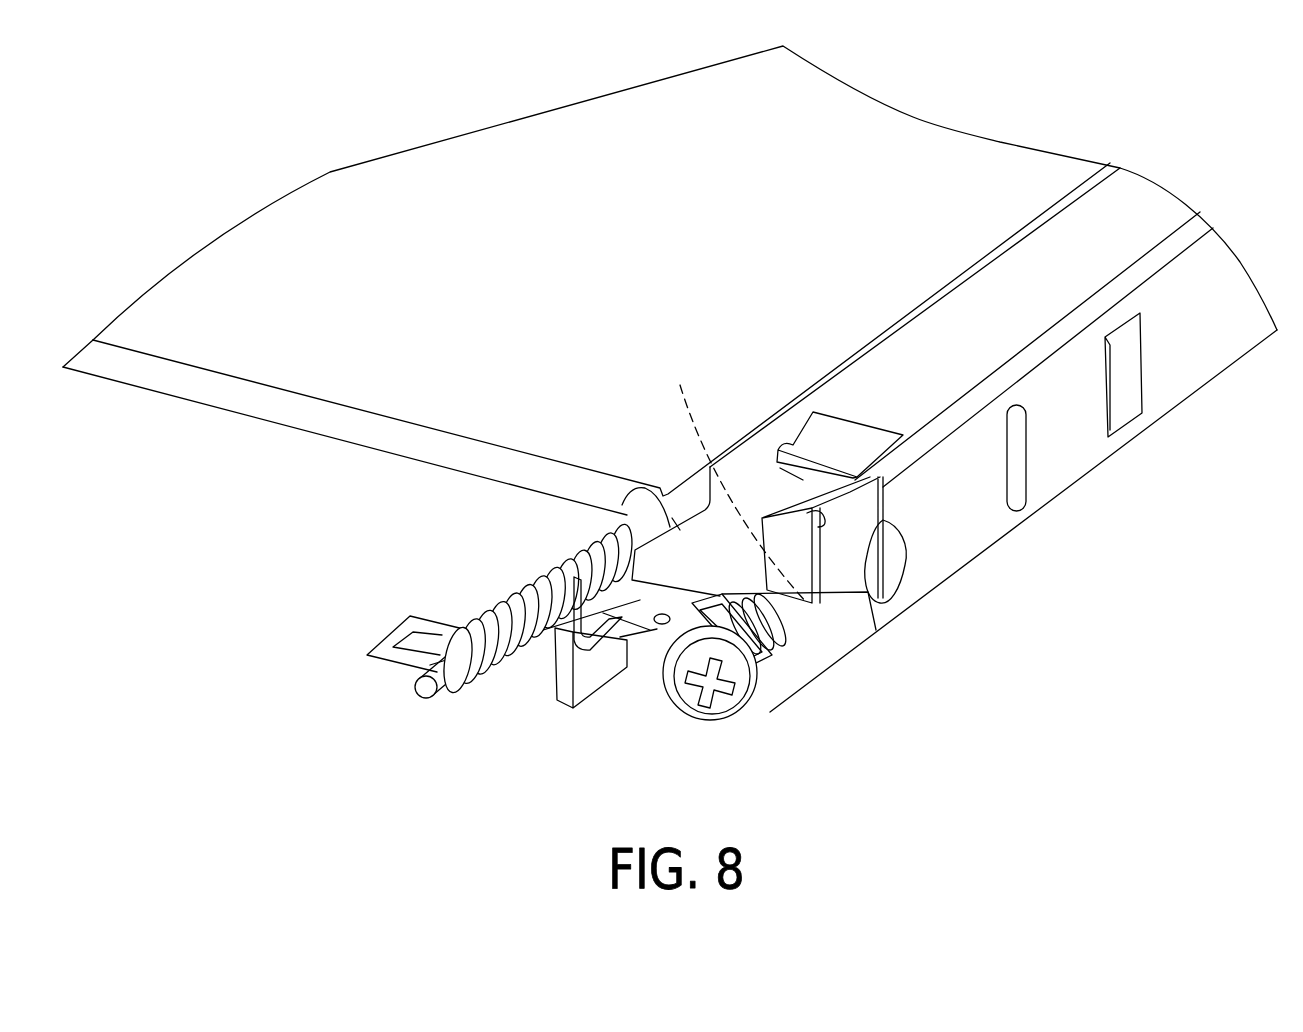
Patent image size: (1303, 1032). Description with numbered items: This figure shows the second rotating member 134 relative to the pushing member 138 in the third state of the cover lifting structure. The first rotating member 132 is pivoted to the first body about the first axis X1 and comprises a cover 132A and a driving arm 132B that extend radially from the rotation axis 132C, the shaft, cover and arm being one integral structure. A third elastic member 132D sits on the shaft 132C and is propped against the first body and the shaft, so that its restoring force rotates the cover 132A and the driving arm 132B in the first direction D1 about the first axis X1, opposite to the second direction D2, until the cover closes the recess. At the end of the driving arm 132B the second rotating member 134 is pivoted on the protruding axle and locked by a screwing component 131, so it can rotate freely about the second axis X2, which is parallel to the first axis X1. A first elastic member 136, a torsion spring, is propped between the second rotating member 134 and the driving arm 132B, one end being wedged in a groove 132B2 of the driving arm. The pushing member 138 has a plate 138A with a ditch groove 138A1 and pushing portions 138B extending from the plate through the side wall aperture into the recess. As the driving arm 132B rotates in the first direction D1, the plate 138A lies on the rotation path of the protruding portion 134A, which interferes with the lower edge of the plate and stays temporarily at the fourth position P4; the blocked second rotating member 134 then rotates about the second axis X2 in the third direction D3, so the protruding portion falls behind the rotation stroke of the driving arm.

The screwing component 131 is at (730, 708).
The first rotating member 132 is at (368, 544).
The cover 132A is at (324, 374).
The driving arm 132B is at (423, 663).
The groove 132B2 is at (600, 687).
The rotation axis 132C is at (640, 520).
The third elastic member 132D is at (633, 603).
The second rotating member 134 is at (795, 670).
The protruding portion 134A is at (728, 473).
The first elastic member 136 is at (783, 630).
The pushing member 138 is at (1014, 419).
The plate 138A is at (1167, 317).
The ditch groove 138A1 is at (976, 551).
The pushing portion 138B is at (850, 443).
The fourth position P4 is at (880, 593).
The first axis X1 is at (403, 703).
The second axis X2 is at (712, 682).
The first direction D1 is at (415, 684).
The second direction D2 is at (385, 753).
The third direction D3 is at (727, 753).